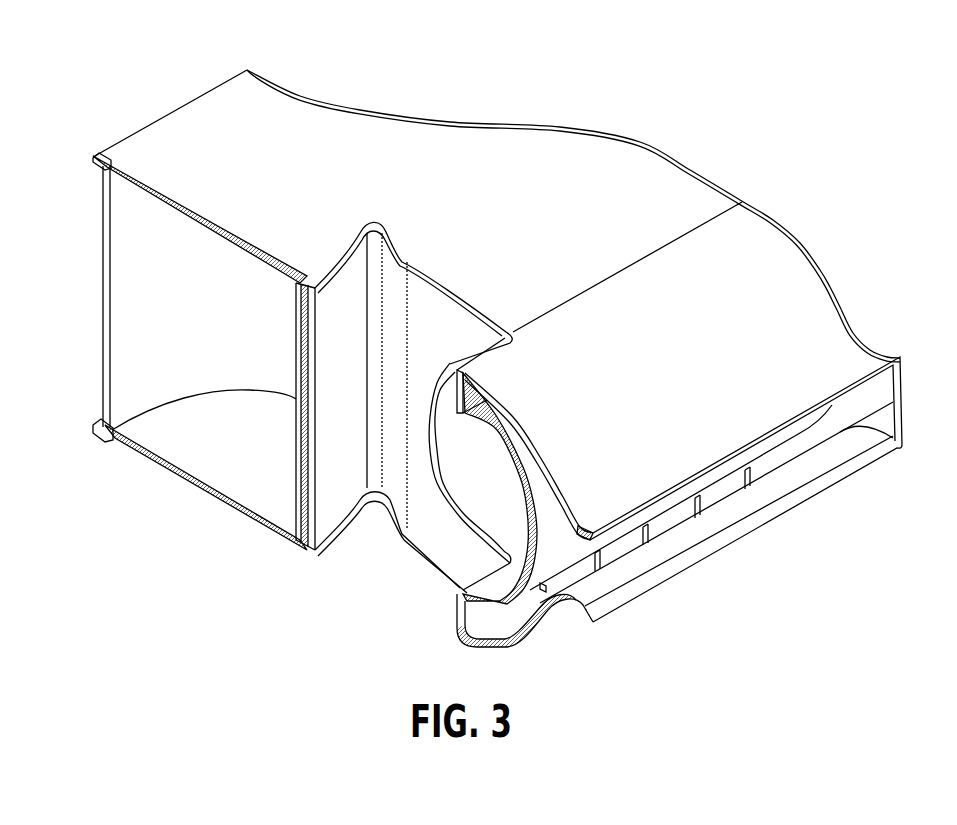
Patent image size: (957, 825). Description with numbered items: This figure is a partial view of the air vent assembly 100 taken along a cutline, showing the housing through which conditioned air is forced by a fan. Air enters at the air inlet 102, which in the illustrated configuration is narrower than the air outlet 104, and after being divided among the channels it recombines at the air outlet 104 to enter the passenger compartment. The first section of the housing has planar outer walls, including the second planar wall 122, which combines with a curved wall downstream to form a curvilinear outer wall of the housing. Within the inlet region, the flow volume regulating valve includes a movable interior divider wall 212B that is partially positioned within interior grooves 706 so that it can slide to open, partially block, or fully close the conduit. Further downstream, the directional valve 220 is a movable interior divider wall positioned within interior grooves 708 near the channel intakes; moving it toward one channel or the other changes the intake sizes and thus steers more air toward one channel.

The air vent assembly 100 is at (744, 75).
The air inlet 102 is at (80, 260).
The air outlet 104 is at (693, 553).
The second planar wall 122 is at (213, 108).
The movable interior divider wall 212B is at (130, 377).
The directional valve 220 is at (297, 428).
The interior grooves 706 is at (102, 157).
The interior grooves 708 is at (305, 282).